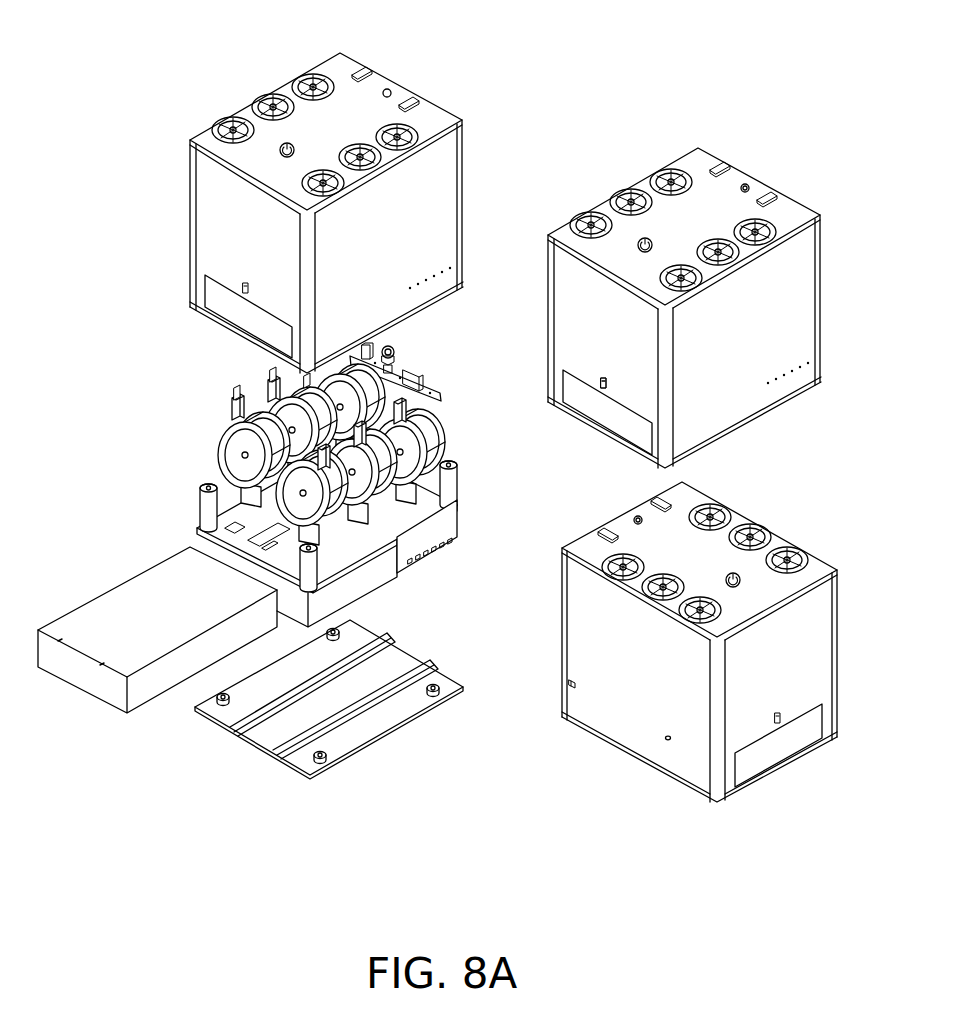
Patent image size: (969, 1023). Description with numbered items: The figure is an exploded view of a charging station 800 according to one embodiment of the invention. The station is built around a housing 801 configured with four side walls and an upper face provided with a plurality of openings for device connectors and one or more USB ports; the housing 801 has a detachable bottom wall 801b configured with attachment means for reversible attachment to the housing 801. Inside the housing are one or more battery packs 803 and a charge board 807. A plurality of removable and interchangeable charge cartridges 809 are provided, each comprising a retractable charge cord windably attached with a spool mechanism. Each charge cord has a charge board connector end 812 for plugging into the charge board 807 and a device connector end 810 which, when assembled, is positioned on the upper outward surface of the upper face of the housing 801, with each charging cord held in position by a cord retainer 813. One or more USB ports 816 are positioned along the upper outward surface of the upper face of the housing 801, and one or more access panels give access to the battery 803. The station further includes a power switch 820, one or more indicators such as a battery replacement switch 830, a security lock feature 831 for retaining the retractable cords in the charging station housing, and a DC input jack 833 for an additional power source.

The charging station 800 is at (616, 75).
The housing 801 is at (452, 155).
The detachable bottom wall 801b is at (343, 760).
The battery pack 803 is at (143, 588).
The charge board 807 is at (457, 517).
The charge cartridge 809 is at (233, 460).
The device connector end 810 is at (277, 373).
The charge board connector end 812 is at (353, 533).
The cord retainer 813 is at (360, 440).
The USB port 816 is at (773, 203).
The power switch 820 is at (747, 185).
The battery replacement switch 830 is at (613, 383).
The security lock feature 831 is at (575, 683).
The DC input jack 833 is at (666, 738).